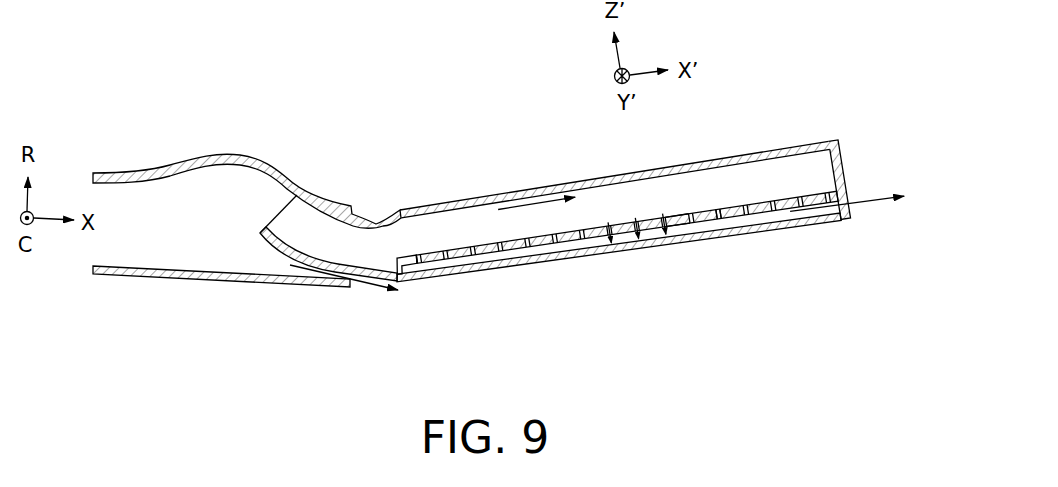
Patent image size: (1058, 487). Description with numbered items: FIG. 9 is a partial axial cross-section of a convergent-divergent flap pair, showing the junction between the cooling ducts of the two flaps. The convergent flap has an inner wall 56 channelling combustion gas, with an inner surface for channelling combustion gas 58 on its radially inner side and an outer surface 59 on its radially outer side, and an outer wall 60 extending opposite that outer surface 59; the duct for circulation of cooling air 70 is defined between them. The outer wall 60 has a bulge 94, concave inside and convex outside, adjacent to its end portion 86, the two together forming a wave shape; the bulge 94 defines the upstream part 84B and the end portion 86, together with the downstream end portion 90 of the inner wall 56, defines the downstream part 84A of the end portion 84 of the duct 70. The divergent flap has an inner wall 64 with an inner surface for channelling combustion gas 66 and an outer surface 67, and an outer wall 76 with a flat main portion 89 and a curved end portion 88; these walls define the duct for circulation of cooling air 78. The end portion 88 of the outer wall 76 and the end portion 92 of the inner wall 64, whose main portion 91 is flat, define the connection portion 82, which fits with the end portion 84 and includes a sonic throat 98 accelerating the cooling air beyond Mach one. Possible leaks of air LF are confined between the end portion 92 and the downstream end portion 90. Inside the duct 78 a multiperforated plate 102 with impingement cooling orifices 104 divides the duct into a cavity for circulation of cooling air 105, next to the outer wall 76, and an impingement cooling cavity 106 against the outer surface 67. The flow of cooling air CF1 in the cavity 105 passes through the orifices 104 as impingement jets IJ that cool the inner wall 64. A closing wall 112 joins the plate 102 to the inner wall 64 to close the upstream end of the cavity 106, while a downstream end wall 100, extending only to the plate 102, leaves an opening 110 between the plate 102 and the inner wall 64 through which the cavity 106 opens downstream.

The inner wall 56 is at (221, 282).
The inner surface for channelling combustion gas 58 is at (221, 282).
The outer surface 59 is at (221, 282).
The outer wall 60 is at (246, 150).
The inner wall 64 is at (618, 248).
The inner surface for channelling combustion gas 66 is at (476, 266).
The outer surface 67 is at (481, 257).
The duct for circulation of cooling air 70 is at (115, 244).
The outer wall 76 is at (615, 147).
The duct for circulation of cooling air 78 is at (616, 267).
The connection portion 82 is at (298, 248).
The end portion 84 is at (255, 305).
The downstream part 84A is at (292, 304).
The upstream part 84B is at (247, 229).
The end portion 86 is at (247, 155).
The end portion 88 is at (334, 216).
The main portion 89 is at (777, 150).
The downstream end portion 90 is at (315, 282).
The main portion 91 is at (823, 219).
The end portion 92 is at (290, 262).
The bulge 94 is at (247, 150).
The sonic throat 98 is at (358, 253).
The downstream end wall 100 is at (845, 165).
The multiperforated plate 102 is at (680, 215).
The impingement cooling orifices 104 is at (715, 212).
The cavity for circulation of cooling air 105 is at (595, 230).
The impingement cooling cavity 106 is at (616, 246).
The opening 110 is at (853, 212).
The closing wall 112 is at (380, 253).
The flow of cooling air CF1 is at (873, 197).
The impingement jets IJ is at (663, 217).
The leaks of air LF is at (362, 288).